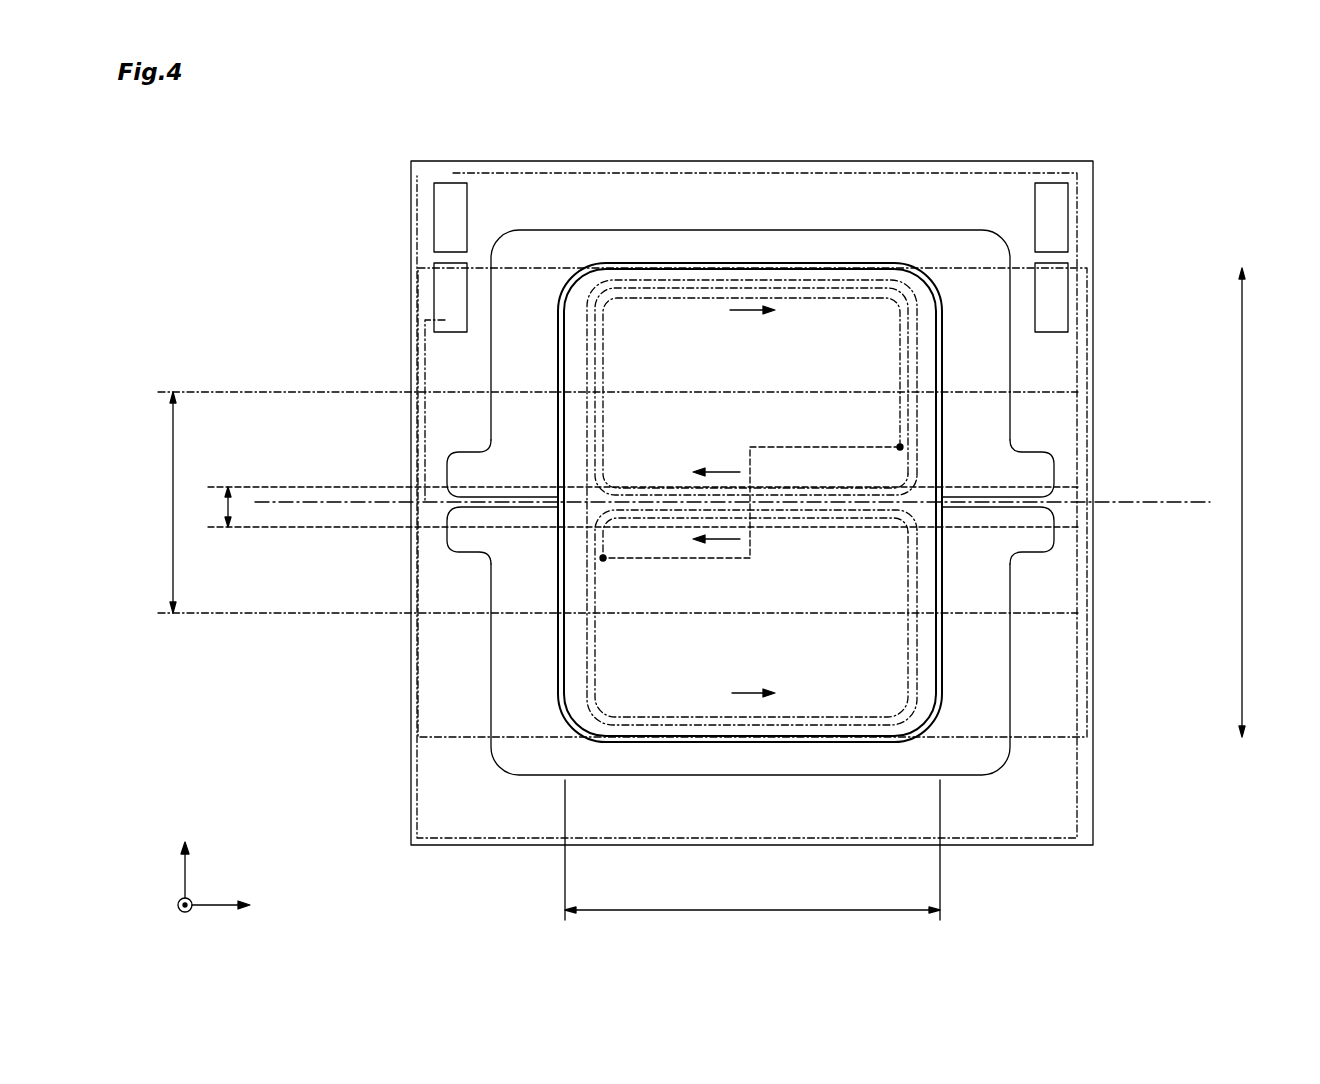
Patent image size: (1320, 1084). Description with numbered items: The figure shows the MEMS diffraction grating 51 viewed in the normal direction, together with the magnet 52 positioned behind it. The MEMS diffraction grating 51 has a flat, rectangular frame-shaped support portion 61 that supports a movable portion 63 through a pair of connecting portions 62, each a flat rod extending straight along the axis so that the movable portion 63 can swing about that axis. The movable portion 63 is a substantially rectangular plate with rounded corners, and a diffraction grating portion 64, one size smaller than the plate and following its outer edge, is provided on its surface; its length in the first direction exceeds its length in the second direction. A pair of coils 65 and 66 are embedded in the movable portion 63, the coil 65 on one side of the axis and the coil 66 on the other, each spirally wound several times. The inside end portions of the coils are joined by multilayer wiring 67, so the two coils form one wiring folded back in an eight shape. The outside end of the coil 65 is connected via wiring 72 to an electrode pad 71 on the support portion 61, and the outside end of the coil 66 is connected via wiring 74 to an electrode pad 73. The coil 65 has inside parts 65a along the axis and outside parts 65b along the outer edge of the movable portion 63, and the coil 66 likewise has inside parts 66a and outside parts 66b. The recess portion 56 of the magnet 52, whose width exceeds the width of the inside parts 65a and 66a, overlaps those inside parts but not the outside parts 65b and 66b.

The MEMS diffraction grating 51 is at (1095, 184).
The magnet 52 is at (1045, 740).
The recess portion 56 is at (1030, 395).
The support portion 61 is at (549, 172).
The connecting portion 62 is at (500, 495).
The movable portion 63 is at (658, 262).
The diffraction grating portion 64 is at (650, 682).
The coil 65 is at (742, 282).
The inside part of coil 65a is at (628, 490).
The outside part of coil 65b is at (828, 298).
The coil 66 is at (709, 727).
The inside part of coil 66a is at (858, 510).
The outside part of coil 66b is at (830, 712).
The multilayer wiring 67 is at (783, 447).
The electrode pad 71 is at (434, 300).
The wiring 72 is at (424, 434).
The electrode pad 73 is at (434, 218).
The wiring 74 is at (938, 172).